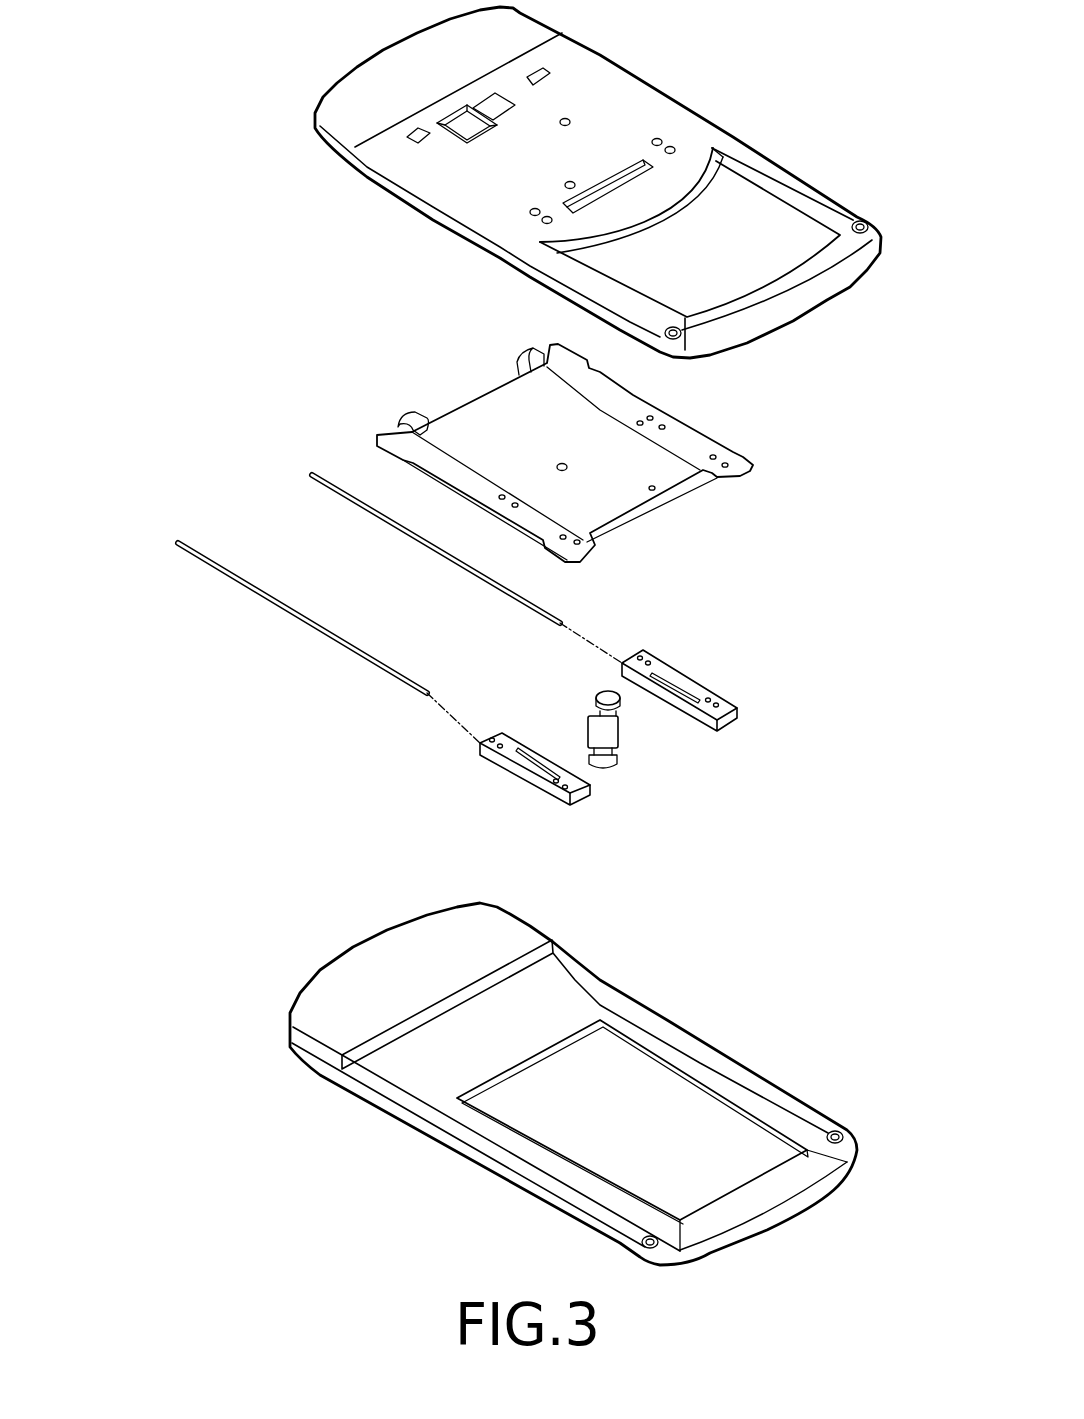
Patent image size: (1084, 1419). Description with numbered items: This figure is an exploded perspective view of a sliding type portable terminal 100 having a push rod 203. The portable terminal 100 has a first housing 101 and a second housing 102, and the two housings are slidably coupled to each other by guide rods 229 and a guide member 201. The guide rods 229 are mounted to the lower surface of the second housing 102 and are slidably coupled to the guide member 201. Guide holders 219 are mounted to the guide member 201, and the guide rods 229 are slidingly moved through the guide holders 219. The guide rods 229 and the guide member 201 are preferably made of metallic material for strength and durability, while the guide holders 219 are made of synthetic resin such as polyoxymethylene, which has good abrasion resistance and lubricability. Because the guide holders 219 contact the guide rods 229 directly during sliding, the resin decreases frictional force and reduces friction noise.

The portable terminal 100 is at (274, 82).
The first housing 101 is at (693, 70).
The second housing 102 is at (357, 916).
The guide member 201 is at (698, 530).
The push rod 203 is at (635, 748).
The guide holders 219 is at (600, 673).
The guide rods 229 is at (347, 522).